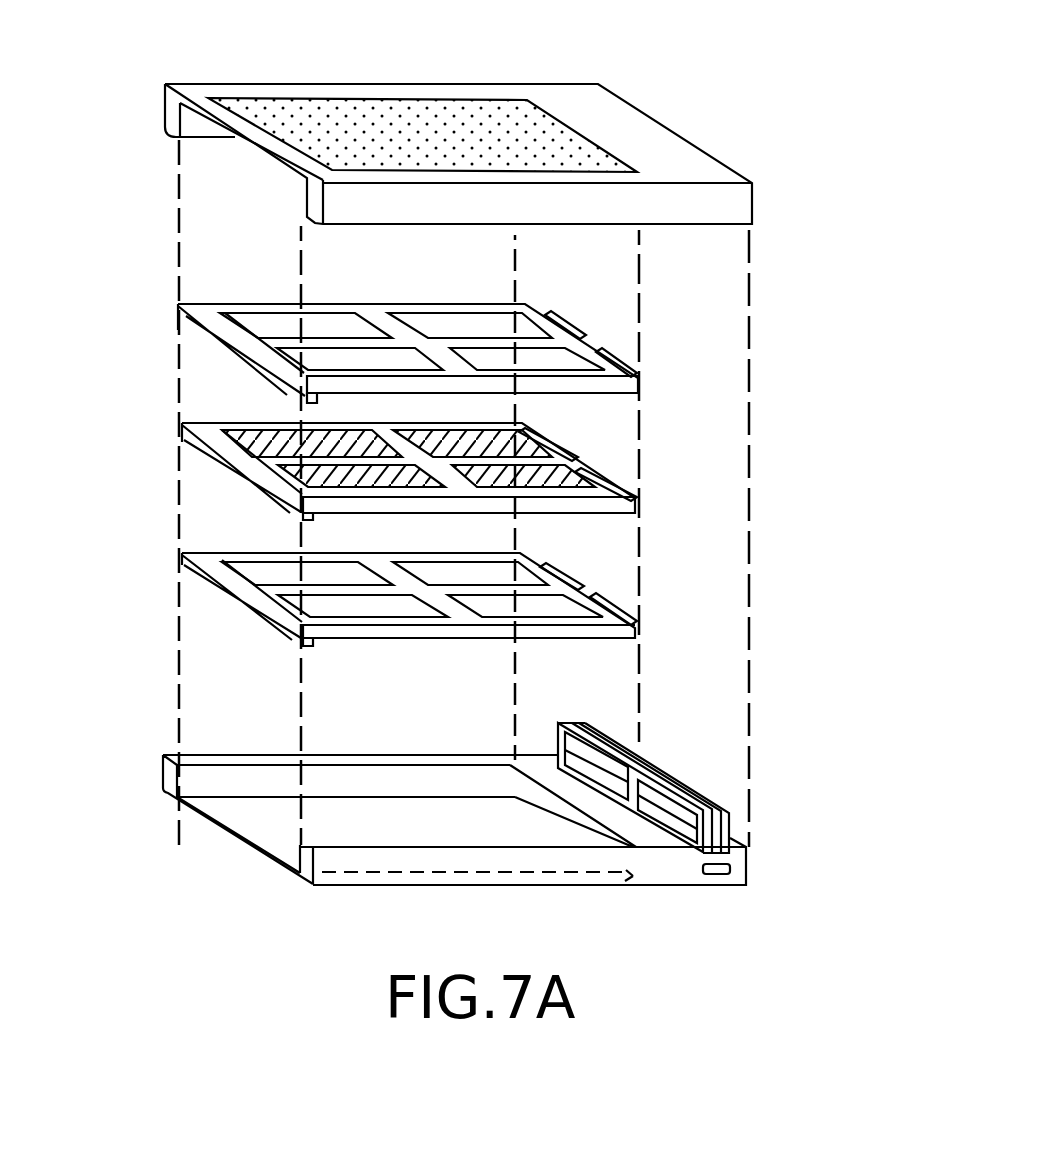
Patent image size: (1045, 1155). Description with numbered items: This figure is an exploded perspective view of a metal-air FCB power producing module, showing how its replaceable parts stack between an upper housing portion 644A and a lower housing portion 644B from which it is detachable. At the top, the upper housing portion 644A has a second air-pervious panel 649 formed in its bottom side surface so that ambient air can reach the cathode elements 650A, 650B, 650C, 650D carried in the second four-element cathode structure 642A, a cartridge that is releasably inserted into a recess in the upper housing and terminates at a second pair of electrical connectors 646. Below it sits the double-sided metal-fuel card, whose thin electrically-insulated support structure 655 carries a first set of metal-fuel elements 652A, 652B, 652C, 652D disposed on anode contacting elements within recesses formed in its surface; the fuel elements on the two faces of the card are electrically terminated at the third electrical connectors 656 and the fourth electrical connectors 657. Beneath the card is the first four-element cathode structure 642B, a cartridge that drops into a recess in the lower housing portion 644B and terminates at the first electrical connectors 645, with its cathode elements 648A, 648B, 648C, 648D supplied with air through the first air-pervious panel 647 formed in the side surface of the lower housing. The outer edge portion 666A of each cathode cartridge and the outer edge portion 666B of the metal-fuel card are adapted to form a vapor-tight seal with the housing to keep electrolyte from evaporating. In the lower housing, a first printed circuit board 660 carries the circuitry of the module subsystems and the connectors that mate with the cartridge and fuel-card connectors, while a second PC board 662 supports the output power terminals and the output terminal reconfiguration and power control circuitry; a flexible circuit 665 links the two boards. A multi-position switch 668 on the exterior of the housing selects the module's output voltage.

The upper housing portion 644A is at (409, 141).
The second air-pervious panel 649 is at (162, 86).
The second four-element cathode structure 642A is at (379, 463).
The cathode element 650A is at (348, 353).
The cathode element 650B is at (240, 312).
The cathode element 650C is at (517, 325).
The cathode element 650D is at (488, 358).
The second pair of electrical connectors 646 is at (620, 353).
The outer edge portion of the cathode cartridges 666A is at (235, 353).
The electrically-insulated support structure 655 is at (467, 462).
The metal-fuel element 652A is at (273, 490).
The metal-fuel element 652B is at (247, 427).
The metal-fuel element 652C is at (555, 430).
The metal-fuel element 652D is at (603, 512).
The third electrical connectors 656 is at (576, 442).
The fourth electrical connectors 657 is at (796, 430).
The outer edge portion of the metal-fuel card 666B is at (257, 467).
The first four-element cathode structure 642B is at (384, 589).
The cathode element 648A is at (278, 603).
The cathode element 648B is at (240, 592).
The cathode element 648C is at (482, 572).
The cathode element 648D is at (600, 640).
The first electrical connectors 645 is at (612, 605).
The lower housing portion 644B is at (438, 851).
The first air-pervious panel 647 is at (400, 870).
The multi-position switch 668 is at (720, 875).
The first printed circuit board 660 is at (713, 828).
The second PC board 662 is at (655, 765).
The flexible circuit 665 is at (683, 782).